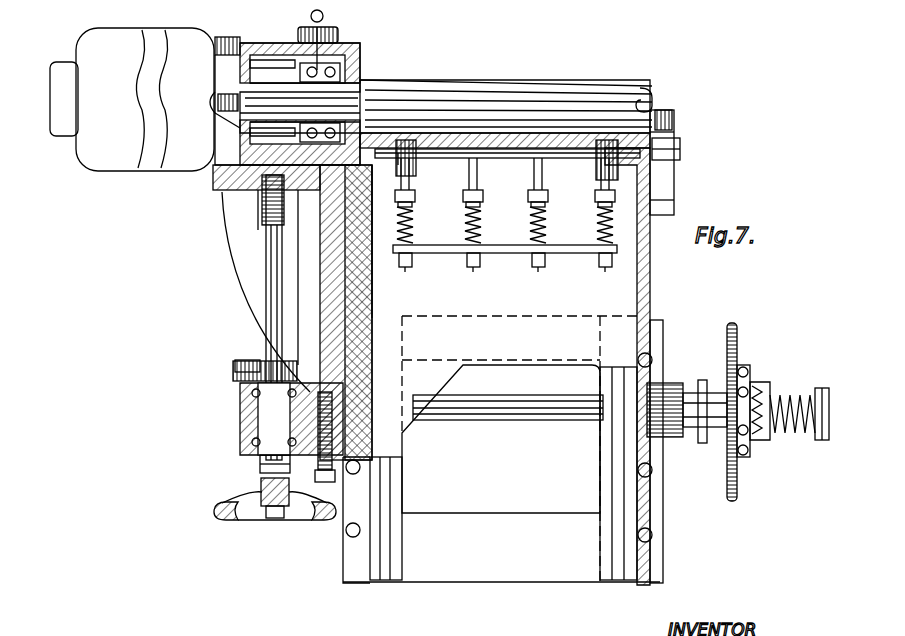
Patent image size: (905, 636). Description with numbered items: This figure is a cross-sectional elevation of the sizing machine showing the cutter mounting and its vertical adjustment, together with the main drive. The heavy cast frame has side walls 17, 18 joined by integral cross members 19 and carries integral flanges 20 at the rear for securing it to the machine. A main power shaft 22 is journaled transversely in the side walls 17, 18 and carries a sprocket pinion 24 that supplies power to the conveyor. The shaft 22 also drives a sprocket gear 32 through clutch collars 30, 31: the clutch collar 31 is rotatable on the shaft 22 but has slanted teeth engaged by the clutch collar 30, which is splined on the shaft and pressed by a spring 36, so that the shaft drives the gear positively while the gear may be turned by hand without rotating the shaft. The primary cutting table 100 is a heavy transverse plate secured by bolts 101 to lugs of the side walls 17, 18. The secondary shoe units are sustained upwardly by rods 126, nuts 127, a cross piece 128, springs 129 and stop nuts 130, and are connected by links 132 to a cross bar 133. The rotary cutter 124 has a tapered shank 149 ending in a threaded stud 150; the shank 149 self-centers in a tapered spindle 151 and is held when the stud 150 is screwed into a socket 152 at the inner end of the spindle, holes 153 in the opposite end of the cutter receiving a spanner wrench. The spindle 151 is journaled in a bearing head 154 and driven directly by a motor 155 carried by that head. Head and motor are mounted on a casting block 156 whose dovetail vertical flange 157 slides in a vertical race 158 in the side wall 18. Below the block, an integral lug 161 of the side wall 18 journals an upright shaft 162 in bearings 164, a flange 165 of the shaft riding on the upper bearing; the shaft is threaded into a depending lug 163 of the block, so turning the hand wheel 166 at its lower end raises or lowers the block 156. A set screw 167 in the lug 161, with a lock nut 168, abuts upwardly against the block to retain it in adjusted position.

The motor 155 is at (168, 42).
The bearing head 154 is at (343, 58).
The tapered spindle 151 is at (353, 78).
The socket 152 is at (214, 118).
The threaded stud 150 is at (222, 125).
The tapered shank 149 is at (343, 107).
The rotary cutter 124 is at (632, 93).
The primary cutting table 100 is at (577, 136).
The links 132 is at (520, 154).
The side wall 17 is at (650, 290).
The bolts 101 is at (676, 178).
The holes 153 is at (645, 99).
The cross bar 133 is at (680, 150).
The stop nuts 130 is at (600, 200).
The nuts 127 is at (474, 268).
The springs 129 is at (481, 222).
The cross piece 128 is at (510, 255).
The rods 126 is at (407, 272).
The vertical flange 157 is at (325, 262).
The casting block 156 is at (232, 218).
The depending lug 163 is at (262, 222).
The upright shaft 162 is at (277, 293).
The flange 165 is at (262, 380).
The lug 161 is at (247, 425).
The bearings 164 is at (253, 395).
The lock nut 168 is at (285, 465).
The hand wheel 166 is at (222, 522).
The set screw 167 is at (325, 484).
The cross members 19 is at (555, 355).
The main power shaft 22 is at (578, 412).
The side wall 18 is at (365, 487).
The vertical race 158 is at (358, 476).
The flanges 20 is at (350, 565).
The sprocket pinion 24 is at (702, 442).
The sprocket gear 32 is at (736, 495).
The clutch collar 31 is at (748, 446).
The clutch collar 30 is at (768, 440).
The spring 36 is at (795, 398).